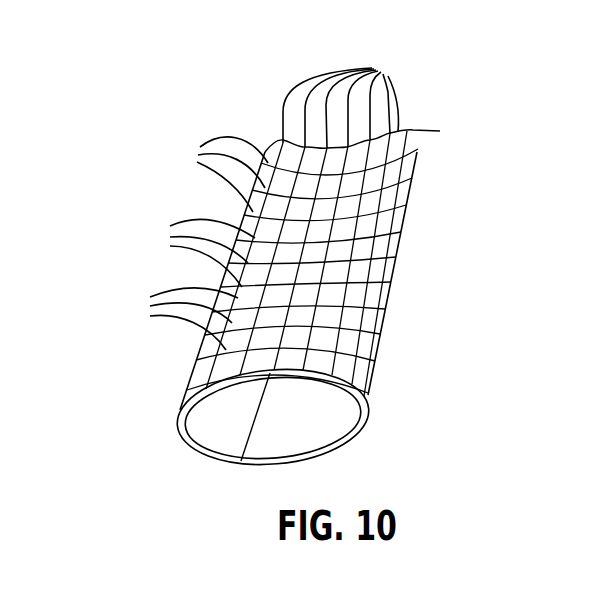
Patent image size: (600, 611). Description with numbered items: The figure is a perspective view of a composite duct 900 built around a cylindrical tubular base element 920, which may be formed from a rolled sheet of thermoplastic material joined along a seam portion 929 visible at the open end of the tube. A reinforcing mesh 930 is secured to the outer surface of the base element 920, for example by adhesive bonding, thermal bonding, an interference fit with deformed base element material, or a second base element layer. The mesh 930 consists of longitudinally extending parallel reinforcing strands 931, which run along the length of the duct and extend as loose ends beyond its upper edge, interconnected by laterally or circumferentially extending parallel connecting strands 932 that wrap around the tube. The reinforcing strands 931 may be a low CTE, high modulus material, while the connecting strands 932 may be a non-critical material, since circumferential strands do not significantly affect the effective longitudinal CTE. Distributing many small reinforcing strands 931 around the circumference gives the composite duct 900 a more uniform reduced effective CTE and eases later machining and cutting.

The composite duct 900 is at (150, 399).
The cylindrical tubular base element 920 is at (367, 427).
The seam portion 929 is at (236, 480).
The reinforcing mesh 930 is at (410, 276).
The reinforcing strands 931 is at (352, 100).
The connecting strands 932 is at (188, 240).